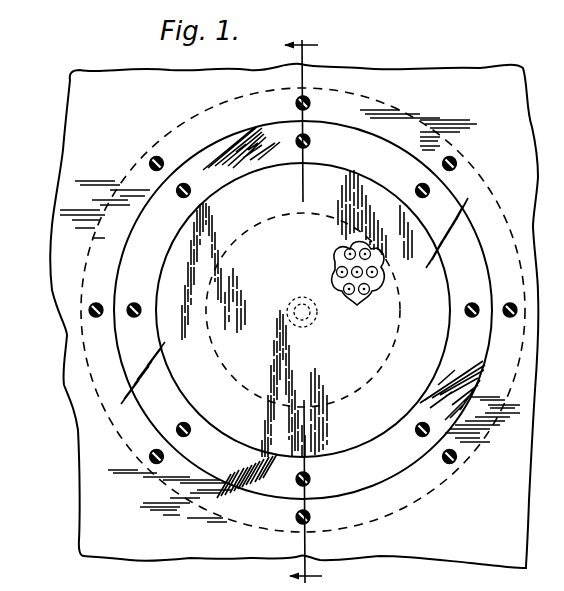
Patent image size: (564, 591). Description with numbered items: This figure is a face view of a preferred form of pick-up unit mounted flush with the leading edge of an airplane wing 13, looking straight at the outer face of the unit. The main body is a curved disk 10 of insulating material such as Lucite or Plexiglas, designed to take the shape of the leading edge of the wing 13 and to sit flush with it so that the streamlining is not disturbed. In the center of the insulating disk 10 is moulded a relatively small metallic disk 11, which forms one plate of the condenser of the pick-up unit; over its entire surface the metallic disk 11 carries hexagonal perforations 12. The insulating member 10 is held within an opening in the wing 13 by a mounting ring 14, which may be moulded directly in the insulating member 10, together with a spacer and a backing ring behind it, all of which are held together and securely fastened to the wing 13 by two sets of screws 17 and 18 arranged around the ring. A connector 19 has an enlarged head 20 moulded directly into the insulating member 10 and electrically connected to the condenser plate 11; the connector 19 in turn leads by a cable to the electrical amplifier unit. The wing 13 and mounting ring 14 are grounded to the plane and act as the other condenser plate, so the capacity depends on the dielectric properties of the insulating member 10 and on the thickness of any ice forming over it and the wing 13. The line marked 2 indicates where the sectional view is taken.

The section line 2- 2 is at (309, 310).
The insulating disk 10 is at (268, 205).
The metallic disk 11 is at (291, 329).
The hexagonal perforations 12 is at (358, 287).
The wing 13 is at (78, 128).
The mounting ring 14 is at (303, 310).
The screws 17 is at (178, 198).
The screws 18 is at (161, 158).
The connector 19 is at (312, 324).
The enlarged head 20 is at (302, 297).